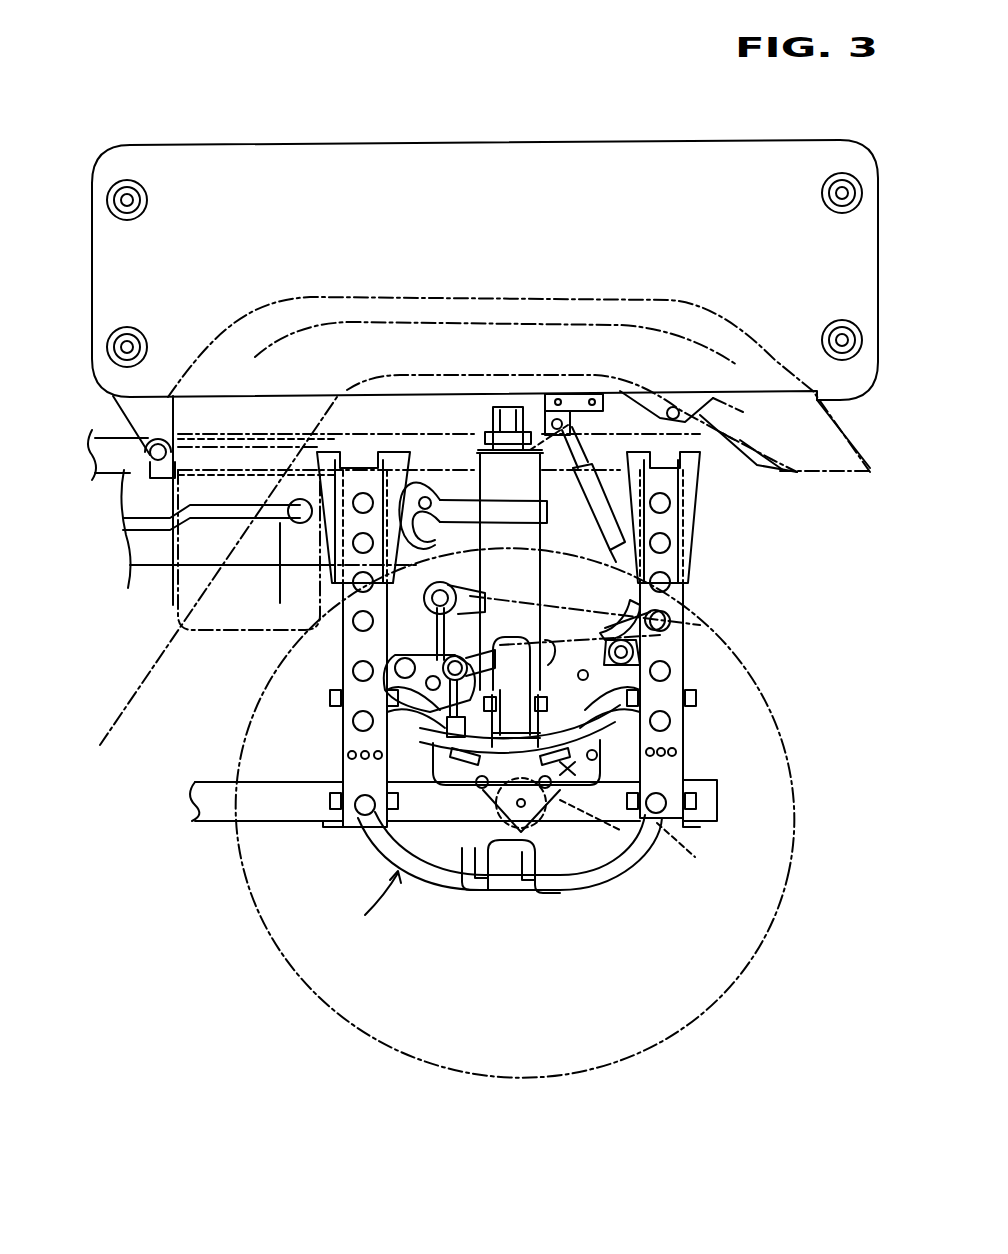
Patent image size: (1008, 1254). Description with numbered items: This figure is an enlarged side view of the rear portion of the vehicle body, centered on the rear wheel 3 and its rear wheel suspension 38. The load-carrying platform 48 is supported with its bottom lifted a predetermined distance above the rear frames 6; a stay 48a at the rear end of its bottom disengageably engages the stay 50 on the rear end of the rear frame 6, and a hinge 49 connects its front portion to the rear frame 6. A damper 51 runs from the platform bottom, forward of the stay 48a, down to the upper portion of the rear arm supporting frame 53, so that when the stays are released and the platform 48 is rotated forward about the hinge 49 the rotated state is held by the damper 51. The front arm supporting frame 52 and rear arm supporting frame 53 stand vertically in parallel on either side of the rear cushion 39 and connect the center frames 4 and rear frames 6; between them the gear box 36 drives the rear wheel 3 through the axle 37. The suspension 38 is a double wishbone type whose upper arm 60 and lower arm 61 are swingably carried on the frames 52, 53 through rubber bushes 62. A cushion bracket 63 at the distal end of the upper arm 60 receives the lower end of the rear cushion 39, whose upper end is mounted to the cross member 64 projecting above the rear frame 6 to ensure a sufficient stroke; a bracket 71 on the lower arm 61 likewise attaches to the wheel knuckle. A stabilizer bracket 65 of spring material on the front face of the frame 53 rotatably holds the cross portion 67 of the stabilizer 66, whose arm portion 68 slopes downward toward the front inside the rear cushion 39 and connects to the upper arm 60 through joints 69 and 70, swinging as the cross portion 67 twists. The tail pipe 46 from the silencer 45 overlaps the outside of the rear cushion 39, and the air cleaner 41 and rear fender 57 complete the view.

The rear wheel 3 is at (320, 1004).
The center frame 4 is at (215, 825).
The rear frame 6 is at (310, 462).
The gear box 36 is at (695, 857).
The axle 37 is at (440, 885).
The rear wheel suspension 38 is at (367, 907).
The rear cushion 39 is at (523, 477).
The air cleaner 41 is at (196, 642).
The silencer 45 is at (130, 560).
The tail pipe 46 is at (546, 507).
The load-carrying platform 48 is at (486, 143).
The stay 48a is at (682, 417).
The hinge 49 is at (154, 462).
The stay 50 is at (763, 462).
The damper 51 is at (650, 492).
The front arm supporting frame 52 is at (340, 645).
The rear arm supporting frame 53 is at (665, 558).
The rear fender 57 is at (836, 474).
The upper arm 60 is at (675, 752).
The lower arm 61 is at (615, 875).
The rubber bush 62 is at (335, 685).
The cushion bracket 63 is at (540, 718).
The cross member 64 is at (495, 408).
The stabilizer bracket 65 is at (630, 598).
The stabilizer 66 is at (634, 656).
The cross portion 67 is at (663, 623).
The arm portion 68 is at (548, 652).
The joint 69 is at (436, 660).
The joint 70 is at (350, 748).
The bracket 71 is at (514, 880).